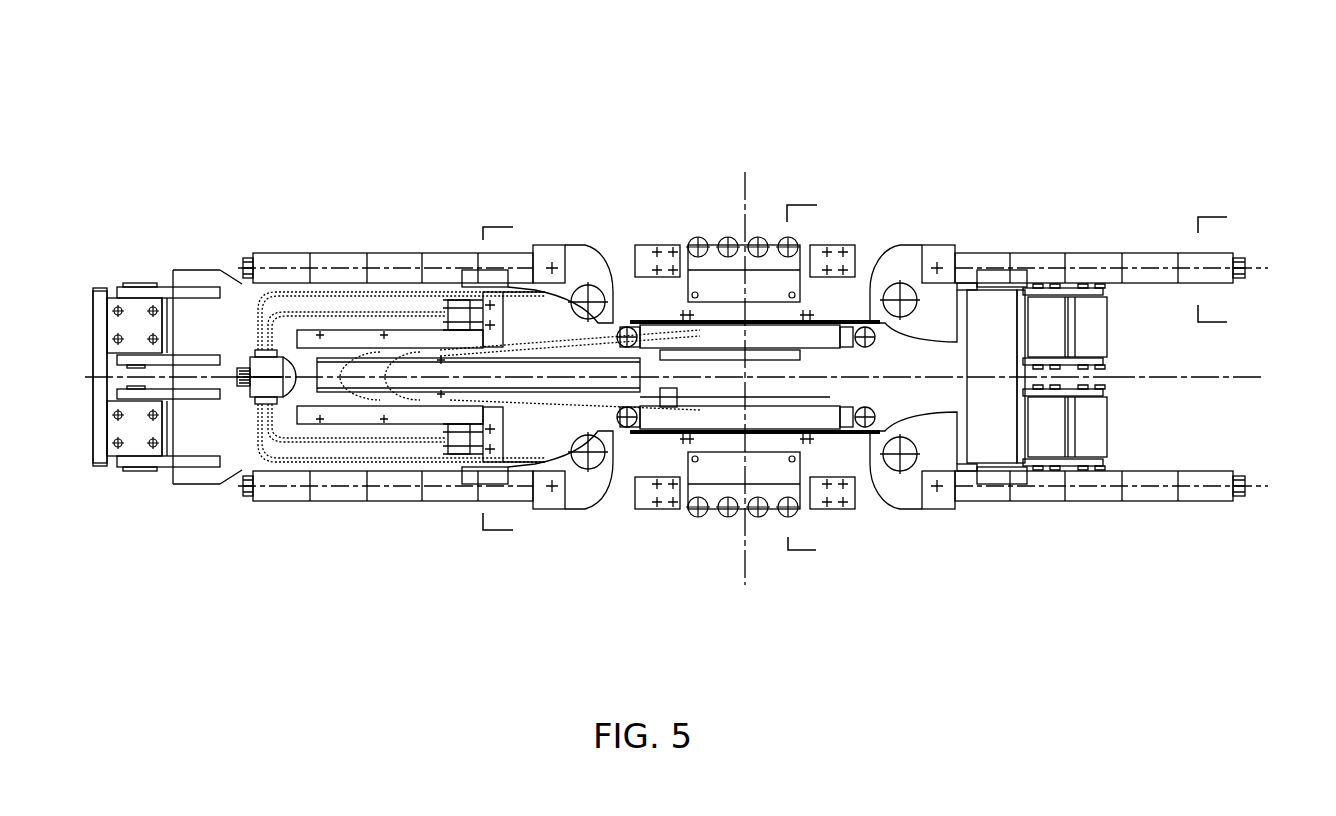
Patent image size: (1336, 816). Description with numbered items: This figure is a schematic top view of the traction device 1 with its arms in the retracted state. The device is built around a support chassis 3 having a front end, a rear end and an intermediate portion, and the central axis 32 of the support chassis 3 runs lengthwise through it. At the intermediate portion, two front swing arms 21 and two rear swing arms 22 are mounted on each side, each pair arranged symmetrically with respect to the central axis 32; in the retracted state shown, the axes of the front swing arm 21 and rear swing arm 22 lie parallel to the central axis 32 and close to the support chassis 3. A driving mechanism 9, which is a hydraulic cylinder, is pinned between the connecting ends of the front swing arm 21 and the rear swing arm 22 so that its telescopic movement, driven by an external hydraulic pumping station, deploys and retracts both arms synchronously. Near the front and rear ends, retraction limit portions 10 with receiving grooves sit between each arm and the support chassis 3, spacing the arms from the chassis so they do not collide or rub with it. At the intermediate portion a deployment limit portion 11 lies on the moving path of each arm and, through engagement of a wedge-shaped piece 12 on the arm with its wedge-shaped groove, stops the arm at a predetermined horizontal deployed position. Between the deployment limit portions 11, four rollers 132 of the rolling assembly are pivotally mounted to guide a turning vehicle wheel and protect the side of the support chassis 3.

The traction device 1 is at (707, 90).
The support chassis 3 is at (238, 440).
The front swing arm 21 is at (400, 492).
The wedge-shaped piece 12 is at (553, 503).
The deployment limit portion 11 is at (633, 500).
The roller 132 is at (693, 507).
The driving mechanism 9 is at (815, 418).
The retraction limit portion 10 is at (990, 490).
The rear swing arm 22 is at (1035, 493).
The central axis 32 is at (1240, 377).